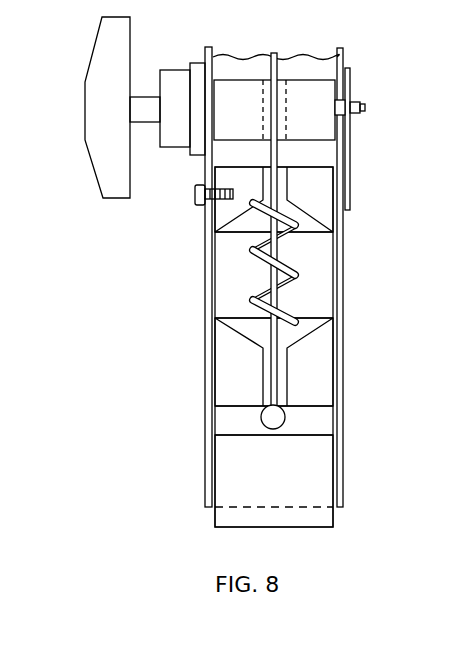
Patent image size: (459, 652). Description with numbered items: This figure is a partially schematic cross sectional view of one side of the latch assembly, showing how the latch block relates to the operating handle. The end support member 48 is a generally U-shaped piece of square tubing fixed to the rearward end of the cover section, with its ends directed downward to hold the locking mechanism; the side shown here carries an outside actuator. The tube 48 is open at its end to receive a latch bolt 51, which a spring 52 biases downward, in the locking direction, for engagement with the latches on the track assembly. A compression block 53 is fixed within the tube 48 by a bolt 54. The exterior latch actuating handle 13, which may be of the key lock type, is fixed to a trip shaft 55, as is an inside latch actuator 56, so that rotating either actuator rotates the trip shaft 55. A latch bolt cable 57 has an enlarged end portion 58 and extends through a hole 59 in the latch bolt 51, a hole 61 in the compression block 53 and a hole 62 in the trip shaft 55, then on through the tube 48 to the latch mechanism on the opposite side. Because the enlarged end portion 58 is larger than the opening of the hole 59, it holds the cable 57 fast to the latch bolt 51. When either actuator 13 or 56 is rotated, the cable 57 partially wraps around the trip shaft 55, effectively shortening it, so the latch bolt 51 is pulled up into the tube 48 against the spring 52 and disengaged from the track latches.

The exterior latch actuating handle 13 is at (123, 58).
The end support member 48 is at (340, 58).
The latch bolt 51 is at (303, 481).
The spring 52 is at (293, 270).
The compression block 53 is at (223, 212).
The bolt 54 is at (202, 205).
The trip shaft 55 is at (323, 100).
The inside latch actuator 56 is at (348, 173).
The latch bolt cable 57 is at (273, 54).
The enlarged end portion 58 is at (284, 417).
The hole 59 is at (262, 375).
The hole 61 is at (287, 183).
The hole 62 is at (263, 117).